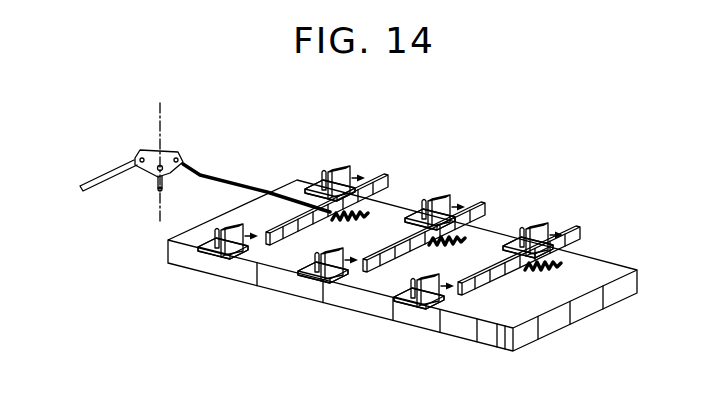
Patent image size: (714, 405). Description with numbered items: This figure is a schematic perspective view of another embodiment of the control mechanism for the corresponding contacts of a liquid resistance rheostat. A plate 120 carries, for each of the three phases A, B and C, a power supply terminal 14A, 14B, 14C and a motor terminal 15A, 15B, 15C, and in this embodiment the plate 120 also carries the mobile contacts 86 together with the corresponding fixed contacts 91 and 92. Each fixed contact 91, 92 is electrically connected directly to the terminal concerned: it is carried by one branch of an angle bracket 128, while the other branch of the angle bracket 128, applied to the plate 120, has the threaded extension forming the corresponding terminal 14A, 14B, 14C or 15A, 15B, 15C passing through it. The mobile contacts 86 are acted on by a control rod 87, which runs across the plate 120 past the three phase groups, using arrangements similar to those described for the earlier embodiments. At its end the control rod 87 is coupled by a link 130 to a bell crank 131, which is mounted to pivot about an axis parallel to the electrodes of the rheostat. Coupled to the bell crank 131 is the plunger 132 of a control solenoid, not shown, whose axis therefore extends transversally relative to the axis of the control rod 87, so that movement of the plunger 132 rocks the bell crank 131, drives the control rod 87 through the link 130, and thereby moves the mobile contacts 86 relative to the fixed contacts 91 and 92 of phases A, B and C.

The plate 120 is at (579, 332).
The angle bracket 128 is at (334, 160).
The link 130 is at (184, 162).
The bell crank 131 is at (150, 152).
The plunger 132 is at (91, 178).
The terminal 14A is at (320, 184).
The terminal 14B is at (419, 205).
The terminal 14C is at (520, 225).
The terminal 15A is at (215, 248).
The terminal 15B is at (310, 262).
The terminal 15C is at (414, 292).
The mobile contact 86 is at (277, 243).
The control rod 87 is at (247, 188).
The fixed contact 91 is at (346, 172).
The fixed contact 92 is at (236, 253).
The phase A is at (388, 138).
The phase B is at (500, 169).
The phase C is at (571, 180).